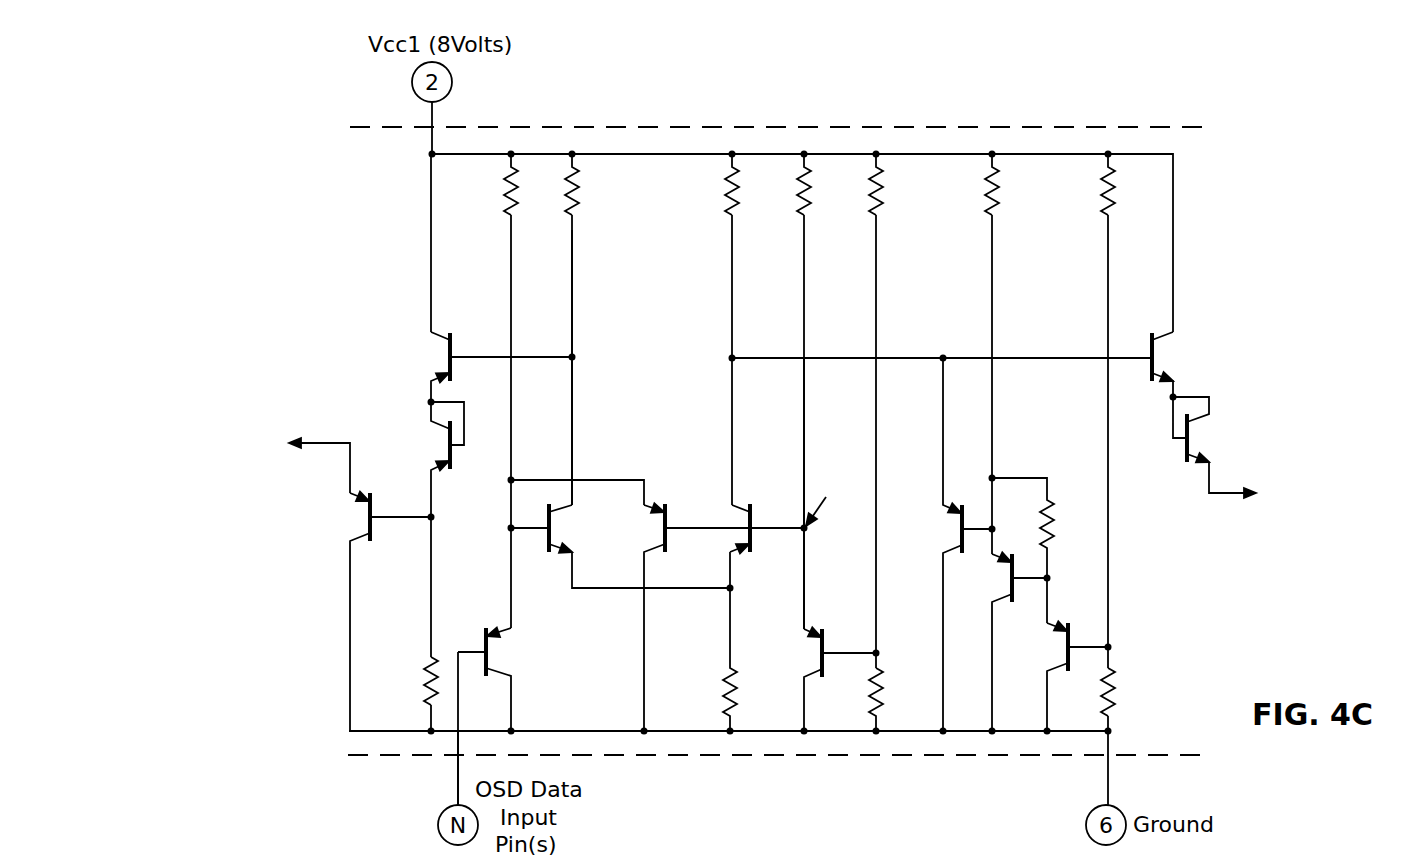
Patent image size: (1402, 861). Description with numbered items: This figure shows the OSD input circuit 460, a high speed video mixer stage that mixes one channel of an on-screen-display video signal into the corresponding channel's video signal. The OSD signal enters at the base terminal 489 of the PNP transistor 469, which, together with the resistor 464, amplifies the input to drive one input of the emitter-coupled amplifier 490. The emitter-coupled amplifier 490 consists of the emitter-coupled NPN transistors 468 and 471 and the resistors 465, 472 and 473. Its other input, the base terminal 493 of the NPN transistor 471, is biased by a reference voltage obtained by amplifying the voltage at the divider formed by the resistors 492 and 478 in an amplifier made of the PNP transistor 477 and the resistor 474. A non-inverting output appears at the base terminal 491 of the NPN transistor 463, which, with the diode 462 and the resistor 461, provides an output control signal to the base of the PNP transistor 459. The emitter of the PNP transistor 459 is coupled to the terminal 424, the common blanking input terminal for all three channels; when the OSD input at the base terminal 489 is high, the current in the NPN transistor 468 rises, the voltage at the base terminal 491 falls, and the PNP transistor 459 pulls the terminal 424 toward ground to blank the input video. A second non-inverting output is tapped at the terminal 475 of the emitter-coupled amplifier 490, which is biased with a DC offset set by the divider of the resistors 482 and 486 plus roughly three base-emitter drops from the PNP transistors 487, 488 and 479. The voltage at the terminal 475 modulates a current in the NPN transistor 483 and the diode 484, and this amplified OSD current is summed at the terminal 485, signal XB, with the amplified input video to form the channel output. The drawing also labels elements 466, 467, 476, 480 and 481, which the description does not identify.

The common blanking input terminal 424 is at (333, 449).
The PNP transistor 459 is at (362, 545).
The OSD input circuit 460 is at (878, 83).
The resistor 461 is at (423, 670).
The diode 462 is at (446, 471).
The NPN transistor 463 is at (440, 332).
The resistor 464 is at (514, 202).
The resistor 465 is at (565, 198).
The connection line from R10 466 is at (573, 283).
The connection line to Q13 emitter 467 is at (614, 479).
The NPN transistor 468 is at (548, 540).
The PNP transistor 469 is at (490, 651).
The NPN transistor 471 is at (744, 503).
The resistor 472 is at (725, 683).
The resistor 473 is at (738, 202).
The resistor 474 is at (801, 198).
The output terminal 475 is at (668, 503).
The bias point line 476 is at (806, 413).
The PNP transistor 477 is at (824, 636).
The resistor 478 is at (880, 675).
The PNP transistor 479 is at (960, 530).
The resistor R17 480 is at (1042, 532).
The resistor R16 481 is at (998, 202).
The resistor 482 is at (1114, 202).
The NPN transistor 483 is at (1156, 360).
The diode 484 is at (1186, 452).
The output terminal 485 is at (1222, 497).
The resistor 486 is at (1112, 675).
The PNP transistor 487 is at (1050, 675).
The PNP transistor 488 is at (1012, 590).
The base terminal 489 is at (456, 792).
The emitter-coupled amplifier 490 is at (652, 416).
The base terminal 491 is at (533, 356).
The resistor 492 is at (882, 202).
The base terminal 493 is at (805, 566).